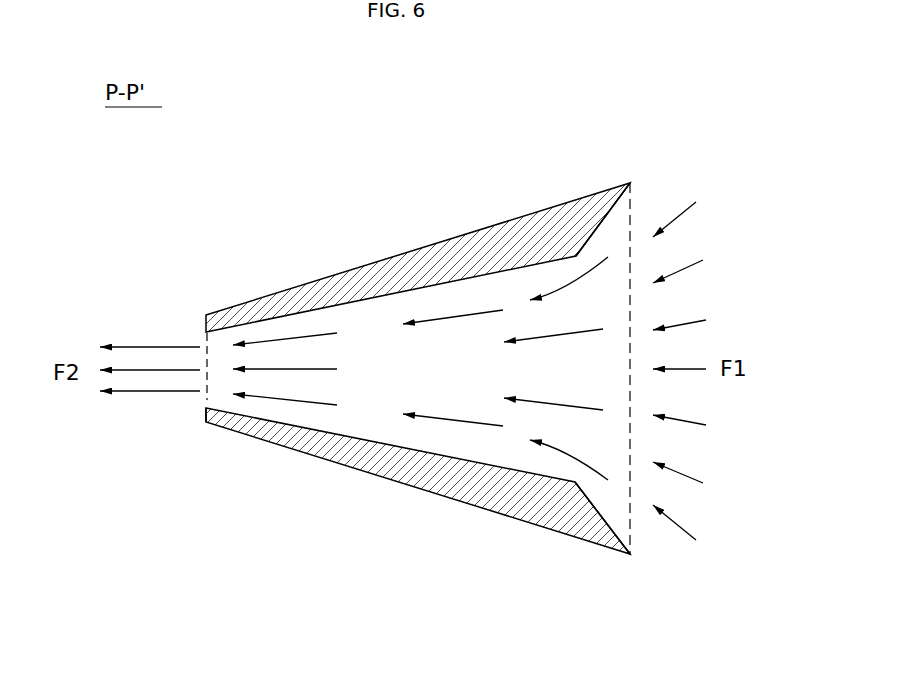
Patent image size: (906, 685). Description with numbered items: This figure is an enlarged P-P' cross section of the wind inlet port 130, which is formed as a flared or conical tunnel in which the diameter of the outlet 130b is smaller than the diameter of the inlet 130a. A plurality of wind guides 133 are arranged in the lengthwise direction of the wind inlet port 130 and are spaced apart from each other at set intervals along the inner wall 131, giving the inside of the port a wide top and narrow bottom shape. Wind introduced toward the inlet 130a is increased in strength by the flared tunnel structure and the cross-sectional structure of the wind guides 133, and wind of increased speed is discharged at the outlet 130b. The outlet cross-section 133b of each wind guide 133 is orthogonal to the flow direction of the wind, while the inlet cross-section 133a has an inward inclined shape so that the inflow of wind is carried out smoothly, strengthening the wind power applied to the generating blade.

The wind inlet port 130 is at (295, 198).
The inlet 130a is at (633, 220).
The outlet 130b is at (202, 345).
The inner wall 131 is at (577, 199).
The wind guide 133 is at (455, 236).
The inlet cross-section 133a is at (604, 516).
The outlet cross-section 133b is at (203, 410).